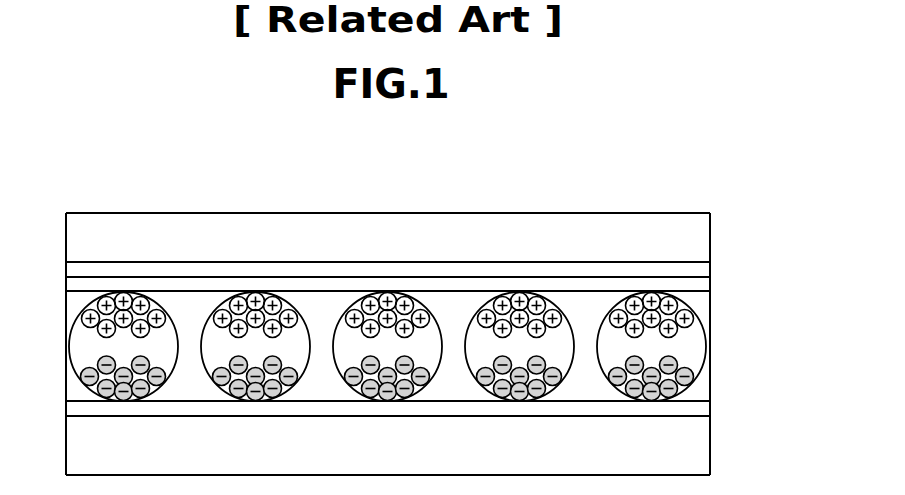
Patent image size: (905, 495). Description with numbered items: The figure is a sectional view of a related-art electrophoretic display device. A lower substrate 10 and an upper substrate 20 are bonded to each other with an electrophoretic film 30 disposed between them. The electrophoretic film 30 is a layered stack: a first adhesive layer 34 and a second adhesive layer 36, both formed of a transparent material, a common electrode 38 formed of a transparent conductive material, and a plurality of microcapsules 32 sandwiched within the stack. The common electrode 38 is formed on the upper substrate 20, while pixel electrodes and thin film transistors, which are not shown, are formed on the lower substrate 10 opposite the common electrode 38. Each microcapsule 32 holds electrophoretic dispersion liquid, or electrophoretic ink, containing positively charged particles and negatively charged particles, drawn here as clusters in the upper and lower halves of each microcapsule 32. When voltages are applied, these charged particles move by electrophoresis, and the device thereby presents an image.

The lower substrate 10 is at (704, 447).
The upper substrate 20 is at (704, 235).
The electrophoretic film 30 is at (780, 268).
The microcapsule 32 is at (704, 346).
The first adhesive layer 34 is at (704, 409).
The second adhesive layer 36 is at (704, 269).
The common electrode 38 is at (704, 287).